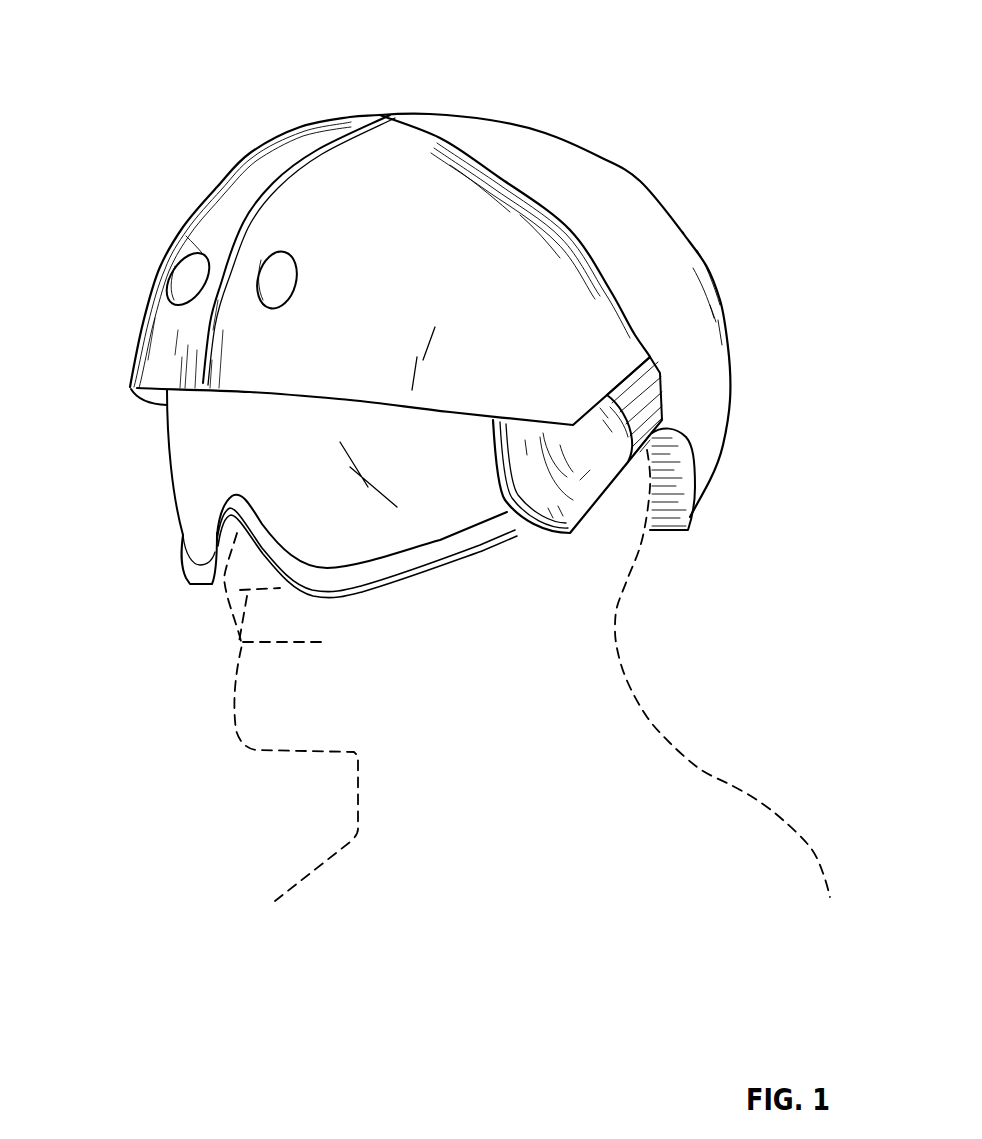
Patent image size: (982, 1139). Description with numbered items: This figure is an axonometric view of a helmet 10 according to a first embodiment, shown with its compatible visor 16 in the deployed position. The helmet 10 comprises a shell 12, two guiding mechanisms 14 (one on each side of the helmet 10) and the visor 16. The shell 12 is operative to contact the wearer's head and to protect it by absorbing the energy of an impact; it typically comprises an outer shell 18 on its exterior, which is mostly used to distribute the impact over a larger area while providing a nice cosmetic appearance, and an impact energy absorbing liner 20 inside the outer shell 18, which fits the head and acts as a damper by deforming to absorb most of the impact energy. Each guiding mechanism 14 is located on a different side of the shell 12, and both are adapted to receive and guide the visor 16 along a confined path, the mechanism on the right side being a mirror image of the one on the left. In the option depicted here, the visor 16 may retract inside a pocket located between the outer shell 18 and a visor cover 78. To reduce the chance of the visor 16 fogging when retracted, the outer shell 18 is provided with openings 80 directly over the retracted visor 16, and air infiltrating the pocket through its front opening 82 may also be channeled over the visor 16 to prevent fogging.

The helmet 10 is at (703, 75).
The shell 12 is at (612, 193).
The guiding mechanism 14 is at (118, 350).
The visor 16 is at (186, 474).
The outer shell 18 is at (707, 403).
The impact energy absorbing liner 20 is at (668, 487).
The visor cover 78 is at (183, 233).
The openings 80 is at (270, 270).
The front opening 82 is at (138, 407).